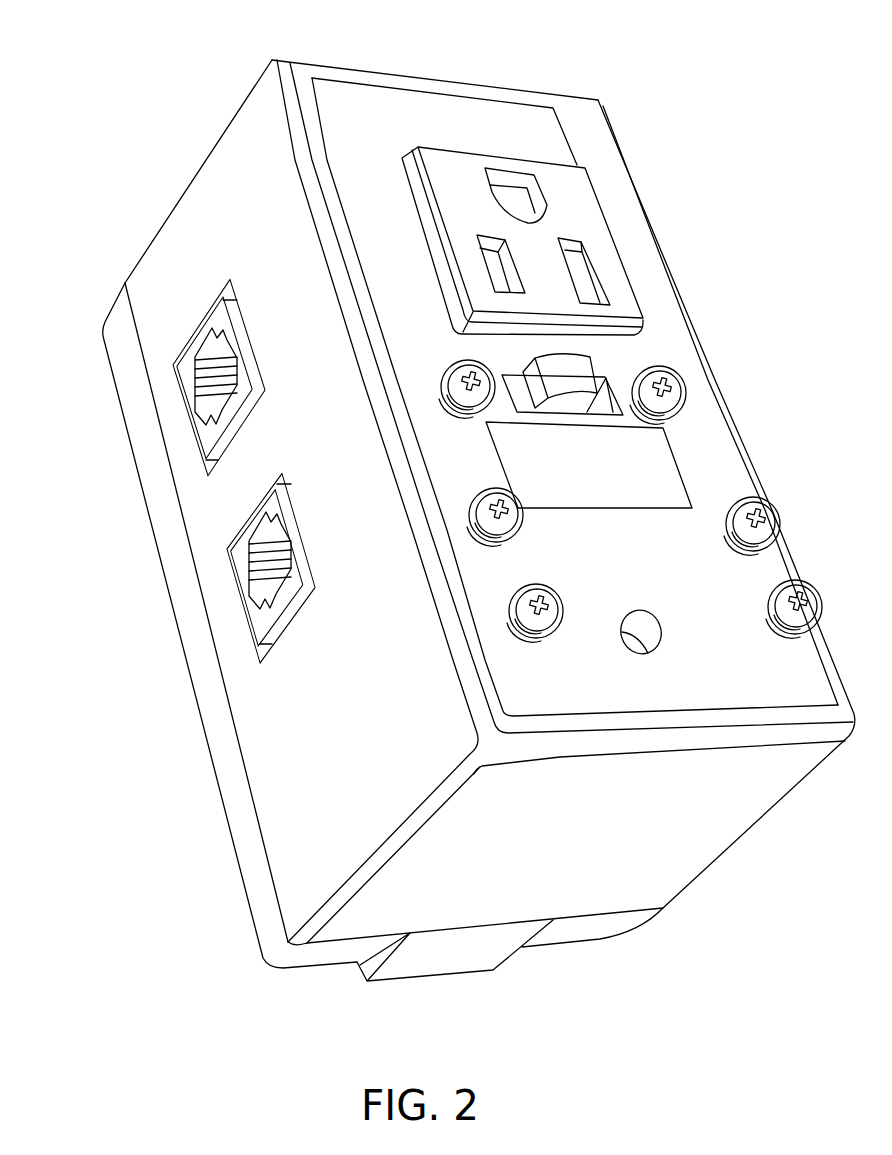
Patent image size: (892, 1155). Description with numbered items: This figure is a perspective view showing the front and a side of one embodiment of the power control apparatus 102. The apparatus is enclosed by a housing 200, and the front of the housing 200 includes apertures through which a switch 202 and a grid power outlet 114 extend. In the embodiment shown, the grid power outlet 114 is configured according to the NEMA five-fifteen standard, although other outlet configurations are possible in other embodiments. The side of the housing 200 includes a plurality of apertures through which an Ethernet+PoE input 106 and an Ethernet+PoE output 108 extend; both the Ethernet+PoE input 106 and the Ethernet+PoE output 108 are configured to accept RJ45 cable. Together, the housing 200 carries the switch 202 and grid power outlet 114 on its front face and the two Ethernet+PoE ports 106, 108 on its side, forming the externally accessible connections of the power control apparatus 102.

The housing 200 is at (100, 158).
The power control apparatus 102 is at (680, 90).
The Ethernet+PoE input 106 is at (233, 574).
The Ethernet+PoE output 108 is at (182, 383).
The grid power outlet 114 is at (605, 218).
The switch 202 is at (580, 368).